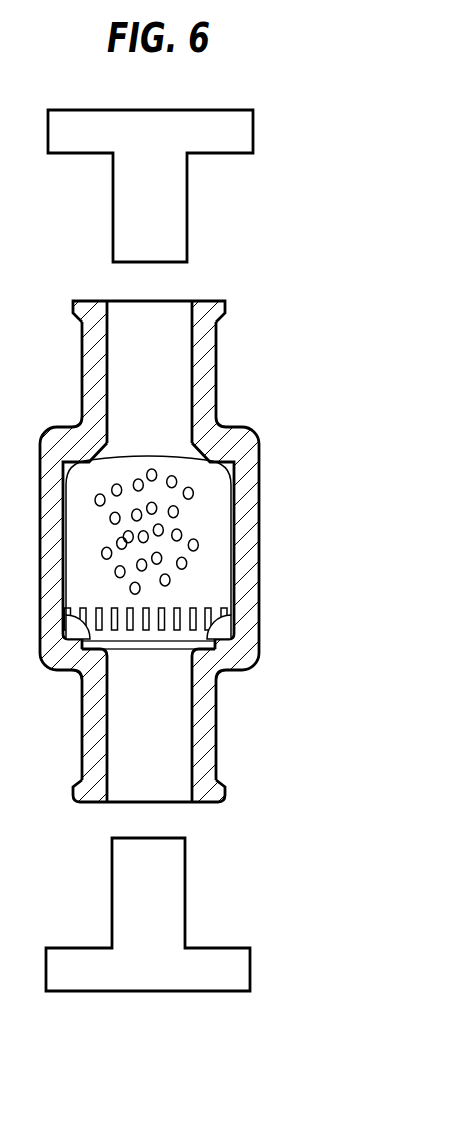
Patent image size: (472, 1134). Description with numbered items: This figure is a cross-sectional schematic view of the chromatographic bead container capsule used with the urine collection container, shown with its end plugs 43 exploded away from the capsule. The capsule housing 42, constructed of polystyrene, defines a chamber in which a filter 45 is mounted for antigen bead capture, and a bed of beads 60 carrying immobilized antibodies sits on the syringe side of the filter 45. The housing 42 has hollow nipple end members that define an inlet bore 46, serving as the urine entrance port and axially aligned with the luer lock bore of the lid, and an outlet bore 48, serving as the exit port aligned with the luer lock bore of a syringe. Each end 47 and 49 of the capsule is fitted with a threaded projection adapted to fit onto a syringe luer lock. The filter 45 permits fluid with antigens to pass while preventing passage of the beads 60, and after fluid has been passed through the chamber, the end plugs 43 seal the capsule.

The capsule housing 42 is at (238, 568).
The end plugs 43 is at (168, 207).
The filter 45 is at (230, 627).
The inlet bore 46 is at (157, 707).
The end of bead container capsule 47 is at (217, 793).
The outlet bore 48 is at (157, 375).
The end of bead container capsule 49 is at (224, 302).
The beads 60 is at (197, 517).